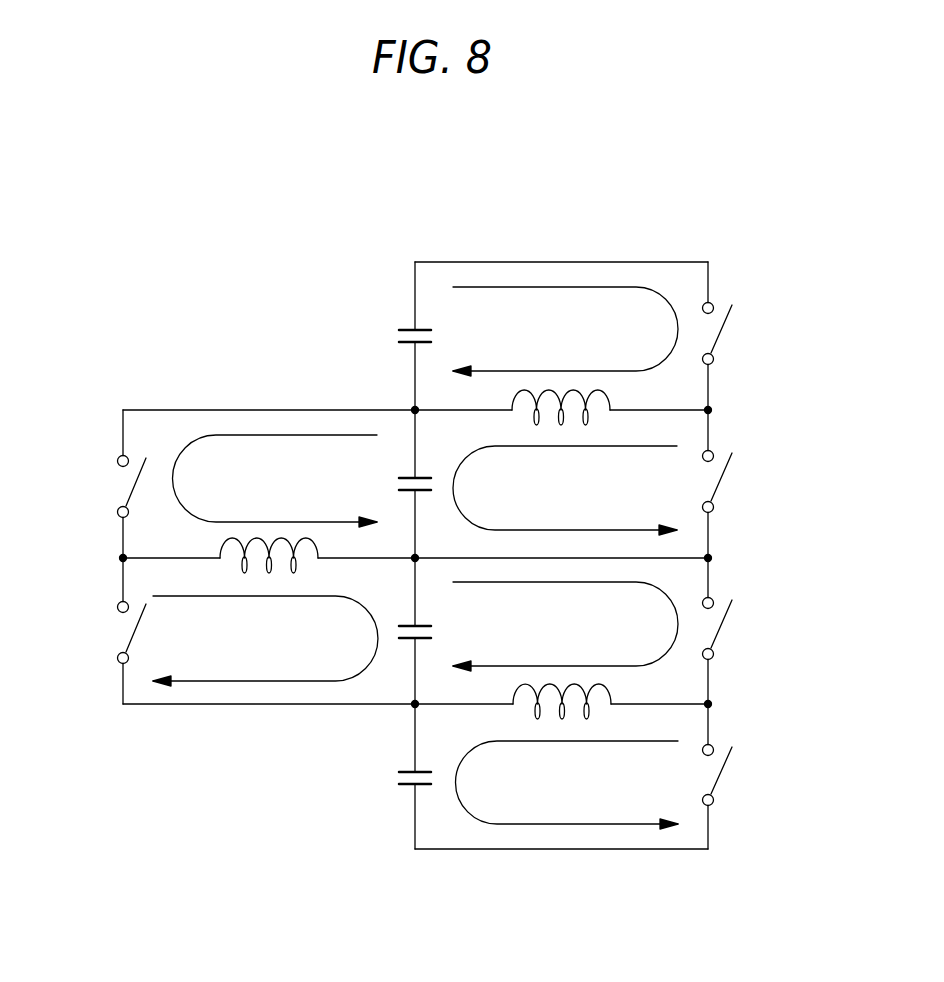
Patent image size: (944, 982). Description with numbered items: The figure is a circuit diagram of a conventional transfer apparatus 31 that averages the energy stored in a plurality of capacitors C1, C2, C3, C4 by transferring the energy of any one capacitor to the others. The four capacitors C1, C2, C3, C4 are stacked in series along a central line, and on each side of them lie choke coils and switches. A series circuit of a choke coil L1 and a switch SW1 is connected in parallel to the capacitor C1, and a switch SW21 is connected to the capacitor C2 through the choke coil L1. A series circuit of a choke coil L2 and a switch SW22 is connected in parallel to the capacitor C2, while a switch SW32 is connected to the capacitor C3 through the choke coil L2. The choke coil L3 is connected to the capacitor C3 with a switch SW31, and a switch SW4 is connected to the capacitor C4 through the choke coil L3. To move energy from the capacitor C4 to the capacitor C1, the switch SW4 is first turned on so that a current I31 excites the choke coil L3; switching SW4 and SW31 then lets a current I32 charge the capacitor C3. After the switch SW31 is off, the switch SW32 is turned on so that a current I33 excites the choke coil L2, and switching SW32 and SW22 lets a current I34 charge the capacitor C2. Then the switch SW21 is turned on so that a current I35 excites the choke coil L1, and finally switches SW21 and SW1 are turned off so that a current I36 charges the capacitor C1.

The transfer apparatus 31 is at (443, 221).
The capacitor C1 is at (408, 771).
The capacitor C2 is at (410, 625).
The capacitor C3 is at (408, 478).
The capacitor C4 is at (410, 328).
The choke coil L1 is at (593, 710).
The choke coil L2 is at (220, 548).
The choke coil L3 is at (594, 415).
The switch SW1 is at (728, 775).
The switch SW4 is at (728, 334).
The switch SW21 is at (728, 628).
The switch SW22 is at (136, 628).
The switch SW31 is at (728, 482).
The switch SW32 is at (136, 482).
The current I31 is at (660, 332).
The current I32 is at (472, 494).
The current I33 is at (192, 484).
The current I34 is at (360, 640).
The current I35 is at (660, 626).
The current I36 is at (474, 786).